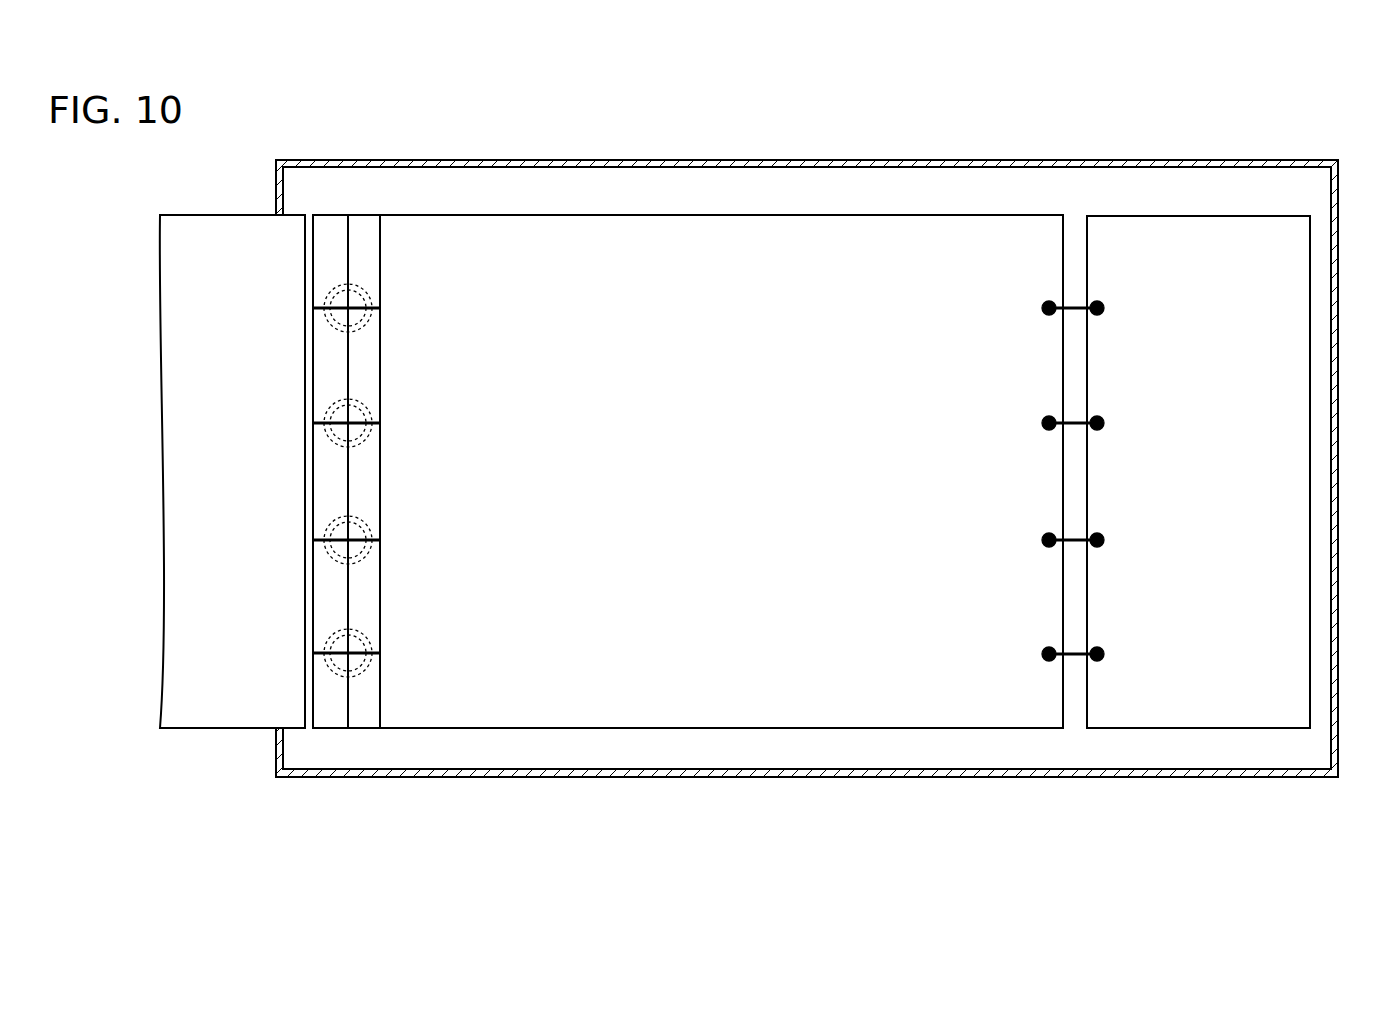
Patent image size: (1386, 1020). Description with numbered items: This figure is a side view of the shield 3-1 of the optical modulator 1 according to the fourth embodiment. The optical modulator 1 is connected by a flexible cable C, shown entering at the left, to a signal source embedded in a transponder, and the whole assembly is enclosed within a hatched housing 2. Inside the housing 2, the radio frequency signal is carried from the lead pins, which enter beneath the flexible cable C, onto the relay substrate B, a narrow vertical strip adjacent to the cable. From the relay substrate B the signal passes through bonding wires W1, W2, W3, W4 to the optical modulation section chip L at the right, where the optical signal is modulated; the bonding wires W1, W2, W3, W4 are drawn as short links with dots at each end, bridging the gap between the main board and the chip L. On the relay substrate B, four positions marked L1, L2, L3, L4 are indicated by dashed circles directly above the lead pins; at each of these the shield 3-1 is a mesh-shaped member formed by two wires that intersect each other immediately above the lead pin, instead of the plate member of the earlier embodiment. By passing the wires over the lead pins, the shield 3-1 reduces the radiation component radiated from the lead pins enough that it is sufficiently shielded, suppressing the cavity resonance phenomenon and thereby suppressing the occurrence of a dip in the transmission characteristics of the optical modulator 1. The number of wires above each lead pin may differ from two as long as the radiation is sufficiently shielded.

The optical modulator 1 is at (890, 113).
The housing 2 is at (577, 161).
The shield 3-1 is at (380, 457).
The relay substrate B is at (397, 233).
The flexible cable C is at (222, 718).
The optical modulation section chip L is at (1235, 215).
The lens 1 L1 is at (372, 642).
The lens 2 L2 is at (372, 529).
The lens 3 L3 is at (372, 412).
The lens 4 L4 is at (372, 297).
The bonding wire W1 is at (1078, 652).
The bonding wire W2 is at (1078, 538).
The bonding wire W3 is at (1078, 421).
The bonding wire W4 is at (1078, 306).